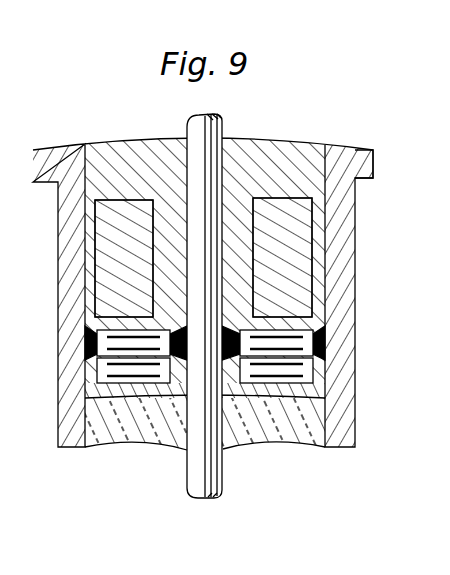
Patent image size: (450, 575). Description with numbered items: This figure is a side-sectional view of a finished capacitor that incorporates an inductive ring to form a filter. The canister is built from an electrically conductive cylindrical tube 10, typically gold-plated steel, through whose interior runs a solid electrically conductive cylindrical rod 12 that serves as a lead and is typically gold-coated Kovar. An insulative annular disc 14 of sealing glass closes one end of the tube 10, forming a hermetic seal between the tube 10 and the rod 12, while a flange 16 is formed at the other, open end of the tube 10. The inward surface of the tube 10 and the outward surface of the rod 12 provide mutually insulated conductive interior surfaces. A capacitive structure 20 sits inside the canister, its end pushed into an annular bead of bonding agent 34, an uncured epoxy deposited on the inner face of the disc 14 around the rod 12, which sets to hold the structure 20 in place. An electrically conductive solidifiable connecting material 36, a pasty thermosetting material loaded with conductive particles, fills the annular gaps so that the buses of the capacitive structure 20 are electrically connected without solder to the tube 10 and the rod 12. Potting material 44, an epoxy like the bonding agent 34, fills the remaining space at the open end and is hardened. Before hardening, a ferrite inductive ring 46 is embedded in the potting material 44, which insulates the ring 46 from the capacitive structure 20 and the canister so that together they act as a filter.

The cylindrical tube 10 is at (348, 309).
The cylindrical rod 12 is at (217, 471).
The disc 14 is at (303, 435).
The flange 16 is at (363, 155).
The capacitive structure 20 is at (298, 362).
The bonding agent 34 is at (150, 398).
The connecting material 36 is at (87, 340).
The potting material 44 is at (157, 157).
The inductive ring 46 is at (290, 243).